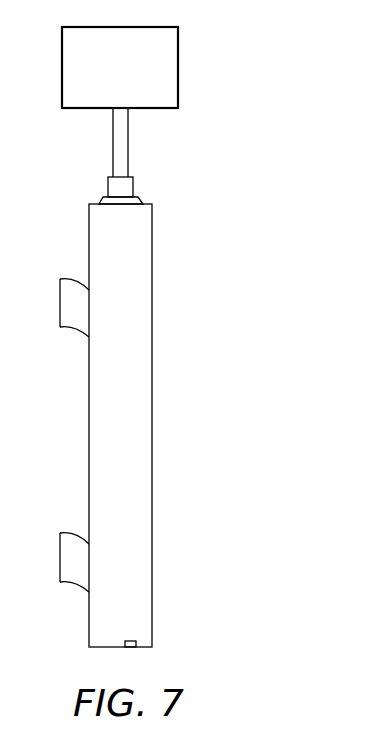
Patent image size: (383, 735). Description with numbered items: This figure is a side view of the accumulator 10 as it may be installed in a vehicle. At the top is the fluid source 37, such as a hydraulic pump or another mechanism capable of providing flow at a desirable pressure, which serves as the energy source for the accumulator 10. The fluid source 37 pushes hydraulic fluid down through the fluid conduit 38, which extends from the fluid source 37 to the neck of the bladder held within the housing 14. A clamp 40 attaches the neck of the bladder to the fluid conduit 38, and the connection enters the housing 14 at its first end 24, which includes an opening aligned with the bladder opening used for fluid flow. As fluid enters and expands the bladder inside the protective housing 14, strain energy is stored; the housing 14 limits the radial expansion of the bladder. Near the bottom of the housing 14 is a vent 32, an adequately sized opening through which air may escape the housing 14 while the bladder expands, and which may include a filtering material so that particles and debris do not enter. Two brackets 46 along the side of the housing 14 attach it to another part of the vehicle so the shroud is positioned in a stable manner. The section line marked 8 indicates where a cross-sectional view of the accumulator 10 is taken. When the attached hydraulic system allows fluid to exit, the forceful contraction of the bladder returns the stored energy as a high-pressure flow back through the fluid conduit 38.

The section line 8- 8 is at (58, 258).
The accumulator 10 is at (188, 318).
The housing 14 is at (139, 391).
The first end 24 is at (143, 199).
The vent 32 is at (130, 647).
The fluid source 37 is at (165, 57).
The fluid conduit 38 is at (122, 122).
The clamp 40 is at (124, 184).
The bracket 46 is at (68, 310).